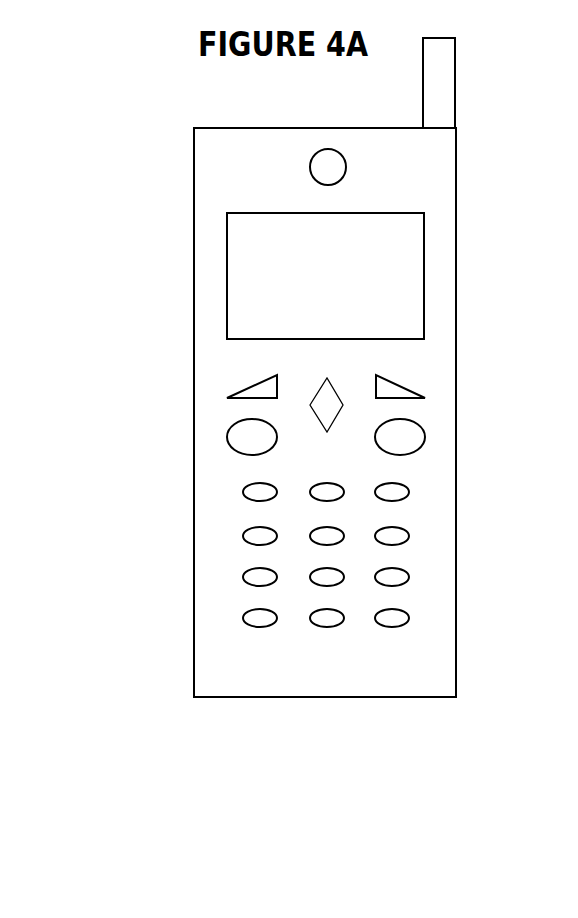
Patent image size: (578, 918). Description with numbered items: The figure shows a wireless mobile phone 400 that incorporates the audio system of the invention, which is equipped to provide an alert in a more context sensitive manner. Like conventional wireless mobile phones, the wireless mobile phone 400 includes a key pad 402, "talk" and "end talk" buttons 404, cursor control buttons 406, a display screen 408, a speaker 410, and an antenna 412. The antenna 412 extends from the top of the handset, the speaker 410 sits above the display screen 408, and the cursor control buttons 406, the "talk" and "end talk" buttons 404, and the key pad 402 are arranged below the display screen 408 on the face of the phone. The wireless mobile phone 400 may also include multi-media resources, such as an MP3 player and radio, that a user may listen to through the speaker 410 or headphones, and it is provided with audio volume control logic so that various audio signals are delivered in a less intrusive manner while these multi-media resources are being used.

The wireless mobile phone 400 is at (272, 697).
The key pad 402 is at (247, 537).
The "talk" and "end talk" buttons 404 is at (233, 432).
The cursor control buttons 406 is at (247, 395).
The display screen 408 is at (399, 240).
The speaker 410 is at (323, 167).
The antenna 412 is at (455, 88).